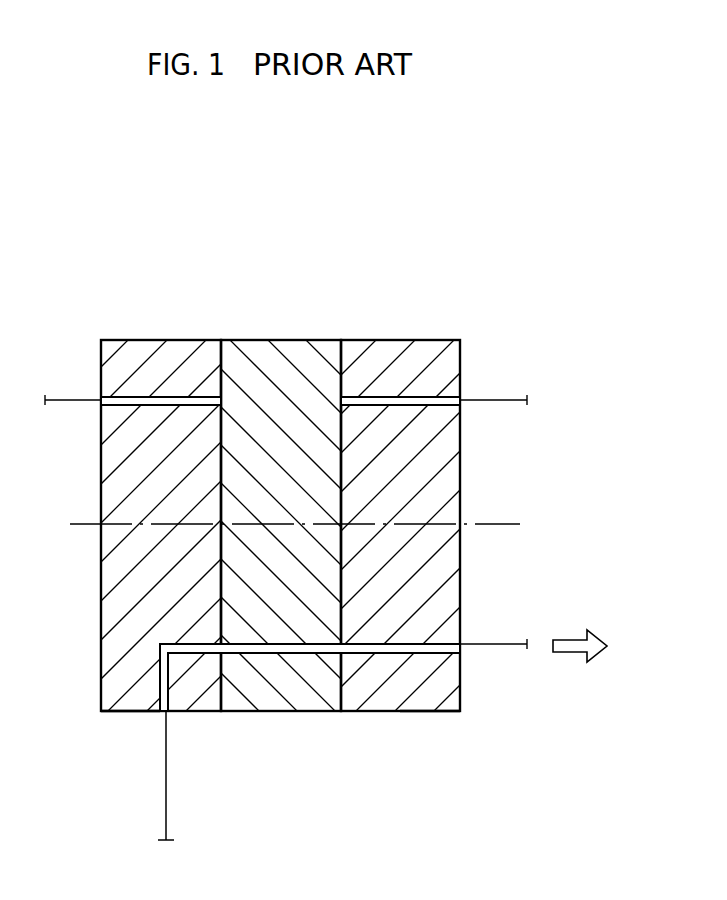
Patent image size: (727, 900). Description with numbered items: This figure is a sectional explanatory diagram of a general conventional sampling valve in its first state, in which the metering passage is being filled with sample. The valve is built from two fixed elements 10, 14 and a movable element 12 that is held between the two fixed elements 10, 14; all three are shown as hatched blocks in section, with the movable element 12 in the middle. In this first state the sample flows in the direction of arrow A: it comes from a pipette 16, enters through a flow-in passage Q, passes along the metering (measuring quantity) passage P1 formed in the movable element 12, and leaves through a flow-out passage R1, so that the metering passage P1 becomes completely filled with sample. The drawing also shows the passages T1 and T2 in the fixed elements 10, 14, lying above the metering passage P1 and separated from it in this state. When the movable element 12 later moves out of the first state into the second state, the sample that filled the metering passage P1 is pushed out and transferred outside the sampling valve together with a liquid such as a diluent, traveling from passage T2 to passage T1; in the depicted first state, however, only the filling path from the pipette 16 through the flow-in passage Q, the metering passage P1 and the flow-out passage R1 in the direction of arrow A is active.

The fixed element 10 is at (170, 340).
The movable element 12 is at (283, 340).
The fixed element 14 is at (410, 340).
The pipette 16 is at (163, 798).
The passage T1 is at (151, 407).
The passage T2 is at (402, 406).
The metering passage P1 is at (289, 653).
The flow-in passage Q is at (128, 712).
The flow-out passage R1 is at (413, 653).
The arrow A is at (581, 659).